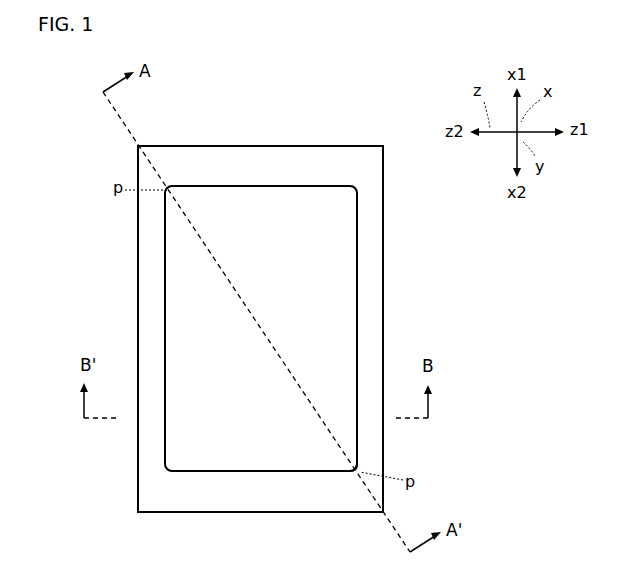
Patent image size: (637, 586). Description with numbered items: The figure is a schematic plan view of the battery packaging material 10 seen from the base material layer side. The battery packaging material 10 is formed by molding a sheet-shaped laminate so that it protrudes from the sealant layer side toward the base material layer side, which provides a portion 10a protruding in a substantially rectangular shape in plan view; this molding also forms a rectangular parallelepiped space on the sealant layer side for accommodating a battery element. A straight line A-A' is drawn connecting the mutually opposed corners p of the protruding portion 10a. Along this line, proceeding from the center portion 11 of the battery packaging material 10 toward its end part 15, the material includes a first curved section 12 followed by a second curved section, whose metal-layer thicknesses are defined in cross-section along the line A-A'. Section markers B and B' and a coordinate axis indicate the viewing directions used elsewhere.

The battery packaging material 10 is at (229, 130).
The protruding portion 10a is at (330, 310).
The center portion 11 is at (258, 325).
The first curved section 12 is at (357, 474).
The end part 15 is at (383, 512).